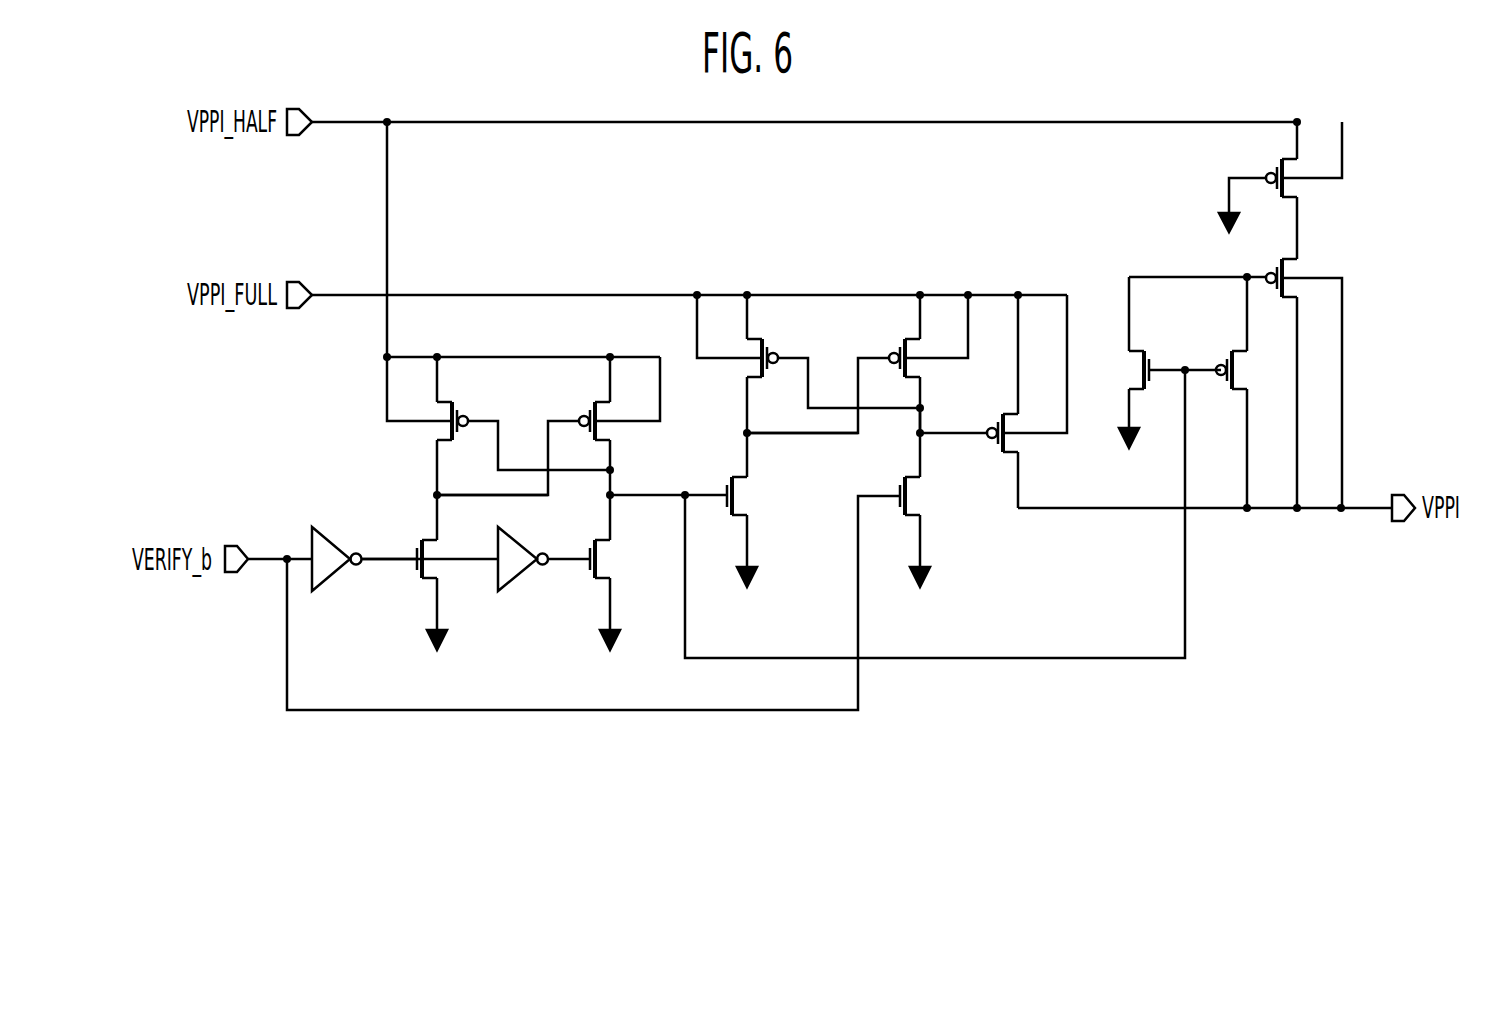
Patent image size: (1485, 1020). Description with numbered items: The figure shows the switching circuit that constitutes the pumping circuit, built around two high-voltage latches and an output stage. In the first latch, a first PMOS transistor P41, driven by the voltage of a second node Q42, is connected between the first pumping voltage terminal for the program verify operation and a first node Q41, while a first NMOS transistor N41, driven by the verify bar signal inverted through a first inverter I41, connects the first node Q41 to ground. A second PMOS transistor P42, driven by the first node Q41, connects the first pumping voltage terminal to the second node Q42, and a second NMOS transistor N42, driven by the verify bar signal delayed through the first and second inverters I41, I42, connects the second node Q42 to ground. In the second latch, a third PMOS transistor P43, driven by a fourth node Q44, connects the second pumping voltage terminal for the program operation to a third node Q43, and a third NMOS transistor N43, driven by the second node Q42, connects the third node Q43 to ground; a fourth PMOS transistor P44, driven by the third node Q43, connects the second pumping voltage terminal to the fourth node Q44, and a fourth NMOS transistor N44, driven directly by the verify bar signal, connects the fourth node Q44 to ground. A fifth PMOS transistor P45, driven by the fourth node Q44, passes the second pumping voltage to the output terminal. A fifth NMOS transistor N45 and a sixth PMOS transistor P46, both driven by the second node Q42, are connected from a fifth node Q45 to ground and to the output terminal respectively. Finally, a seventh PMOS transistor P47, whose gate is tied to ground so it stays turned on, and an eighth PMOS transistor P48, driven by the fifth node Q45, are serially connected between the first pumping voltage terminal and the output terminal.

The first PMOS transistor P41 is at (498, 426).
The second PMOS transistor P42 is at (548, 426).
The third PMOS transistor P43 is at (808, 364).
The fourth PMOS transistor P44 is at (857, 364).
The fifth PMOS transistor P45 is at (1027, 401).
The sixth PMOS transistor P46 is at (1249, 392).
The seventh PMOS transistor P47 is at (1277, 193).
The eighth PMOS transistor P48 is at (1304, 377).
The first NMOS transistor N41 is at (417, 592).
The second NMOS transistor N42 is at (597, 592).
The third NMOS transistor N43 is at (754, 530).
The fourth NMOS transistor N44 is at (927, 530).
The fifth NMOS transistor N45 is at (1161, 383).
The first inverter I41 is at (337, 577).
The second inverter I42 is at (454, 577).
The first node Q41 is at (473, 494).
The second node Q42 is at (666, 475).
The third node Q43 is at (783, 429).
The fourth node Q44 is at (951, 418).
The fifth node Q45 is at (1197, 292).